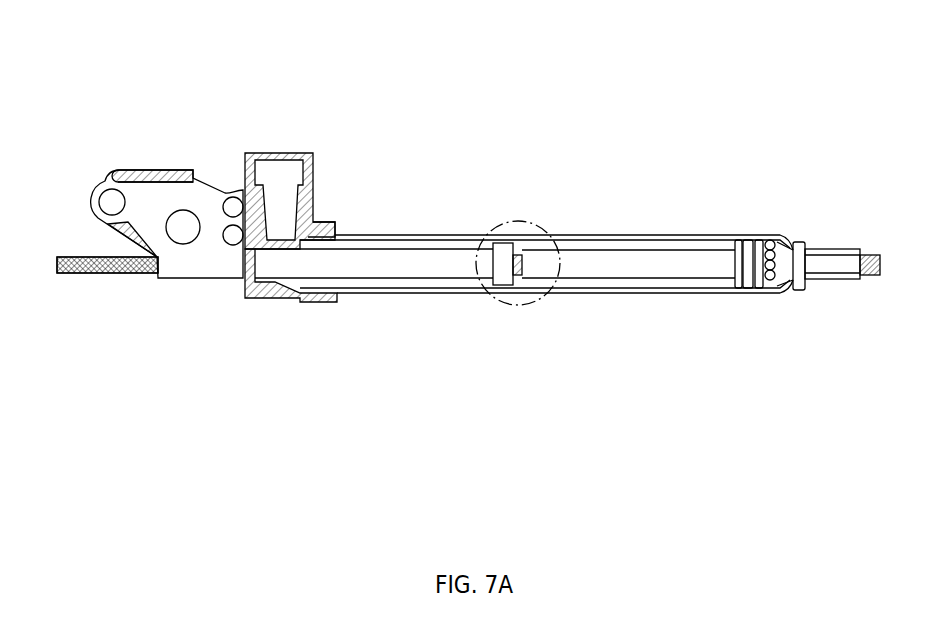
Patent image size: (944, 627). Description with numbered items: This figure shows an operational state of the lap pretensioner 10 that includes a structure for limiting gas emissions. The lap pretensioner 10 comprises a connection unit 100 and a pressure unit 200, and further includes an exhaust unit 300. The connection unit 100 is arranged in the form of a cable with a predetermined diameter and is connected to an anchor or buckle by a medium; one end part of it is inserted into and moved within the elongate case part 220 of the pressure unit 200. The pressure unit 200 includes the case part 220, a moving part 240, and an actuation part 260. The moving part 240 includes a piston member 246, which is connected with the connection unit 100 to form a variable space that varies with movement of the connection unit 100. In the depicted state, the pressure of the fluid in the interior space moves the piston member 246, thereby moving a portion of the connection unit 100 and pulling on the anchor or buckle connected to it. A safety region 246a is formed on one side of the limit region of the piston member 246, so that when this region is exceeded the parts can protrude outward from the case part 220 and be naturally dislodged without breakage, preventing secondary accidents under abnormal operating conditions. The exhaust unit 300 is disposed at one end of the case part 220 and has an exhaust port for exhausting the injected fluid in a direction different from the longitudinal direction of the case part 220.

The lap pretensioner 10 is at (75, 63).
The connection unit 100 is at (106, 275).
The exhaust unit 300 is at (198, 279).
The pressure unit 200 is at (286, 152).
The actuation part 260 is at (313, 207).
The case part 220 is at (562, 235).
The moving part 240 is at (410, 268).
The piston member 246 is at (843, 270).
The safety region 246a is at (783, 268).